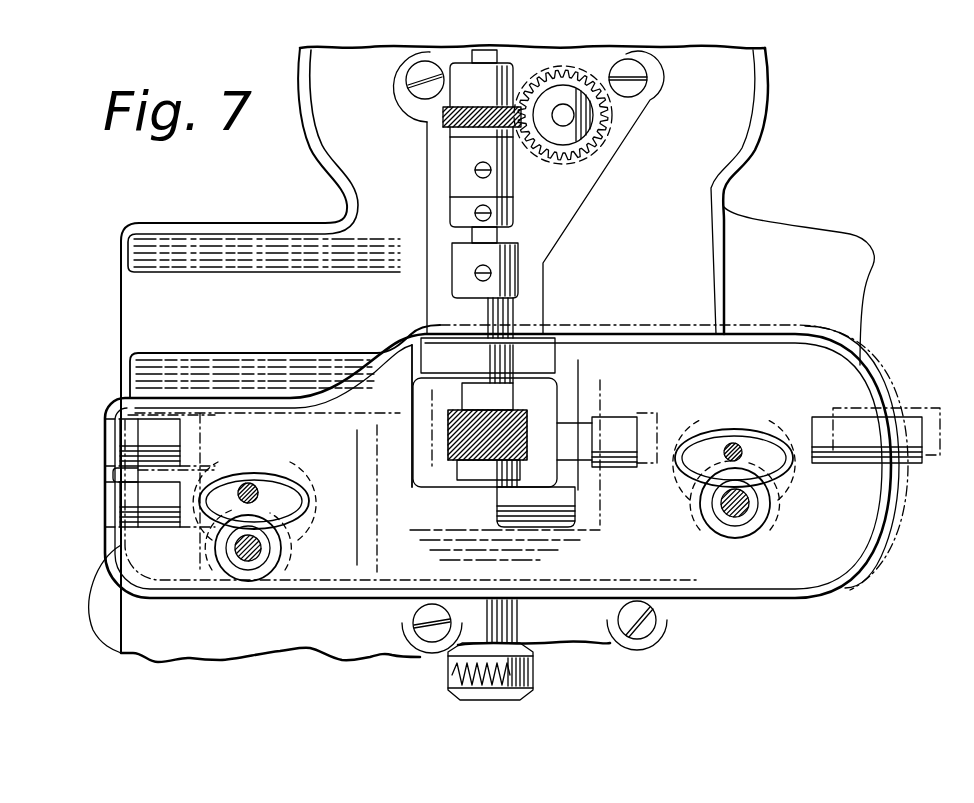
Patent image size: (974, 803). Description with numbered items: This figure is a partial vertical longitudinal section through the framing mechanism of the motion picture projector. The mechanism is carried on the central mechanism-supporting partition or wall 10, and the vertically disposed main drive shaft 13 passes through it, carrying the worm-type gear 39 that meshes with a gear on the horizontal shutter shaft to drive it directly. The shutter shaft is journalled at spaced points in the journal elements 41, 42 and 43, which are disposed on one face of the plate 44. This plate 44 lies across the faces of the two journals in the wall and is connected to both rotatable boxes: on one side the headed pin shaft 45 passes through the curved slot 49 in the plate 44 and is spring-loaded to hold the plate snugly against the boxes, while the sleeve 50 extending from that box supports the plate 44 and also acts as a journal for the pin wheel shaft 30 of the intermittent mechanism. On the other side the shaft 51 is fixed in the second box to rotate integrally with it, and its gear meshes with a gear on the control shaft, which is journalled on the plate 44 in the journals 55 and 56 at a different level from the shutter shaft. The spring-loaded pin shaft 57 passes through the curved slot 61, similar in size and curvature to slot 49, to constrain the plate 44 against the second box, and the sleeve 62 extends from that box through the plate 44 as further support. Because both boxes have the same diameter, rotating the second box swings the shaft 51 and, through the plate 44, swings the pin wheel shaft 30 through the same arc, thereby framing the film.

The mechanism-supporting partition or wall 10 is at (481, 353).
The main drive shaft 13 is at (498, 309).
The pin wheel shaft 30 is at (748, 506).
The gear 39 is at (515, 412).
The journal element 41 is at (848, 425).
The journal element 42 is at (616, 419).
The journal element 43 is at (120, 440).
The plate 44 is at (506, 461).
The headed pin shaft 45 is at (737, 444).
The curved slot 49 is at (704, 456).
The sleeve 50 is at (727, 521).
The shaft 51 is at (283, 548).
The journal 55 is at (138, 500).
The journal 56 is at (497, 506).
The pin shaft 57 is at (262, 483).
The curved slot 61 is at (240, 484).
The sleeve 62 is at (230, 549).